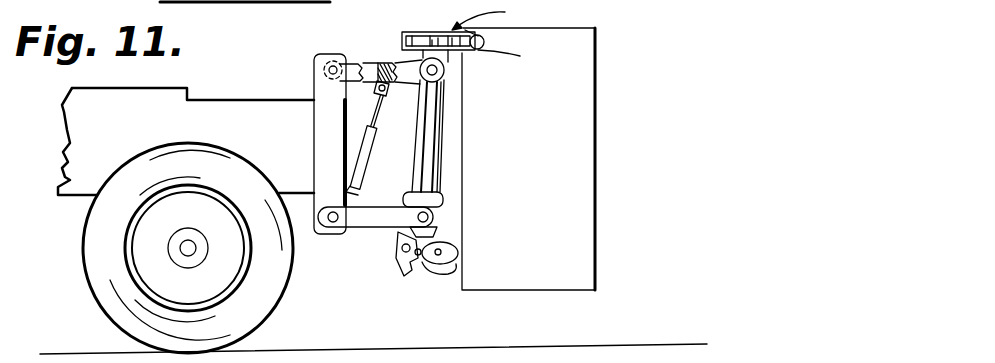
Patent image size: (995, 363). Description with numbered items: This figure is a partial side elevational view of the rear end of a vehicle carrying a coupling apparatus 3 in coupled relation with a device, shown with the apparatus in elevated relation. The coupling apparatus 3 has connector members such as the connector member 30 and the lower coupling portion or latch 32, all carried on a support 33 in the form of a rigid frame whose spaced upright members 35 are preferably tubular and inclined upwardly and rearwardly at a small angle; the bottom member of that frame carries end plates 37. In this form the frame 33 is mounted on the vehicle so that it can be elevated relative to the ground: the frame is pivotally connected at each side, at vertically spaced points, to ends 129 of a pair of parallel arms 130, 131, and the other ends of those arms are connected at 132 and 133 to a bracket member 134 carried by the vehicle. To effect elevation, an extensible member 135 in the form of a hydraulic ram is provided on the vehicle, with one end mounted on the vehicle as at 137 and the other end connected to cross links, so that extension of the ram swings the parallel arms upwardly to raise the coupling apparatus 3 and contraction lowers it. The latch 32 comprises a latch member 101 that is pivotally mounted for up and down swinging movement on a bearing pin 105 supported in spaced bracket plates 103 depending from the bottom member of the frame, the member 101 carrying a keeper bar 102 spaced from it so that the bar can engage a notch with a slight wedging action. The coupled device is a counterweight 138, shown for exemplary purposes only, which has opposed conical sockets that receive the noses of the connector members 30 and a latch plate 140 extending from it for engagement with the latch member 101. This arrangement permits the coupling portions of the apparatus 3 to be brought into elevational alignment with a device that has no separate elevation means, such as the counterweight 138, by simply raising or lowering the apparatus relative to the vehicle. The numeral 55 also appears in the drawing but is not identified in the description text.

The coupling apparatus 3 is at (483, 17).
The connector member 30 is at (508, 28).
The mounting plate 55 is at (440, 31).
The ends of parallel arms 129 is at (450, 66).
The upper parallel arm 130 is at (372, 62).
The lower parallel arm 131 is at (378, 228).
The arm connection 132 is at (326, 71).
The arm connection 133 is at (333, 228).
The bracket member 134 is at (328, 130).
The extensible member 135 is at (372, 150).
The ram mounting 137 is at (358, 192).
The counterweight 138 is at (580, 90).
The support 33 is at (447, 137).
The upright member 35 is at (447, 164).
The end plate 37 is at (442, 199).
The keeper bar 102 is at (445, 250).
The latch member 101 is at (455, 263).
The latch plate 140 is at (445, 278).
The bearing pin 105 is at (398, 258).
The bracket plate 103 is at (400, 265).
The lower coupling portion 32 is at (408, 272).